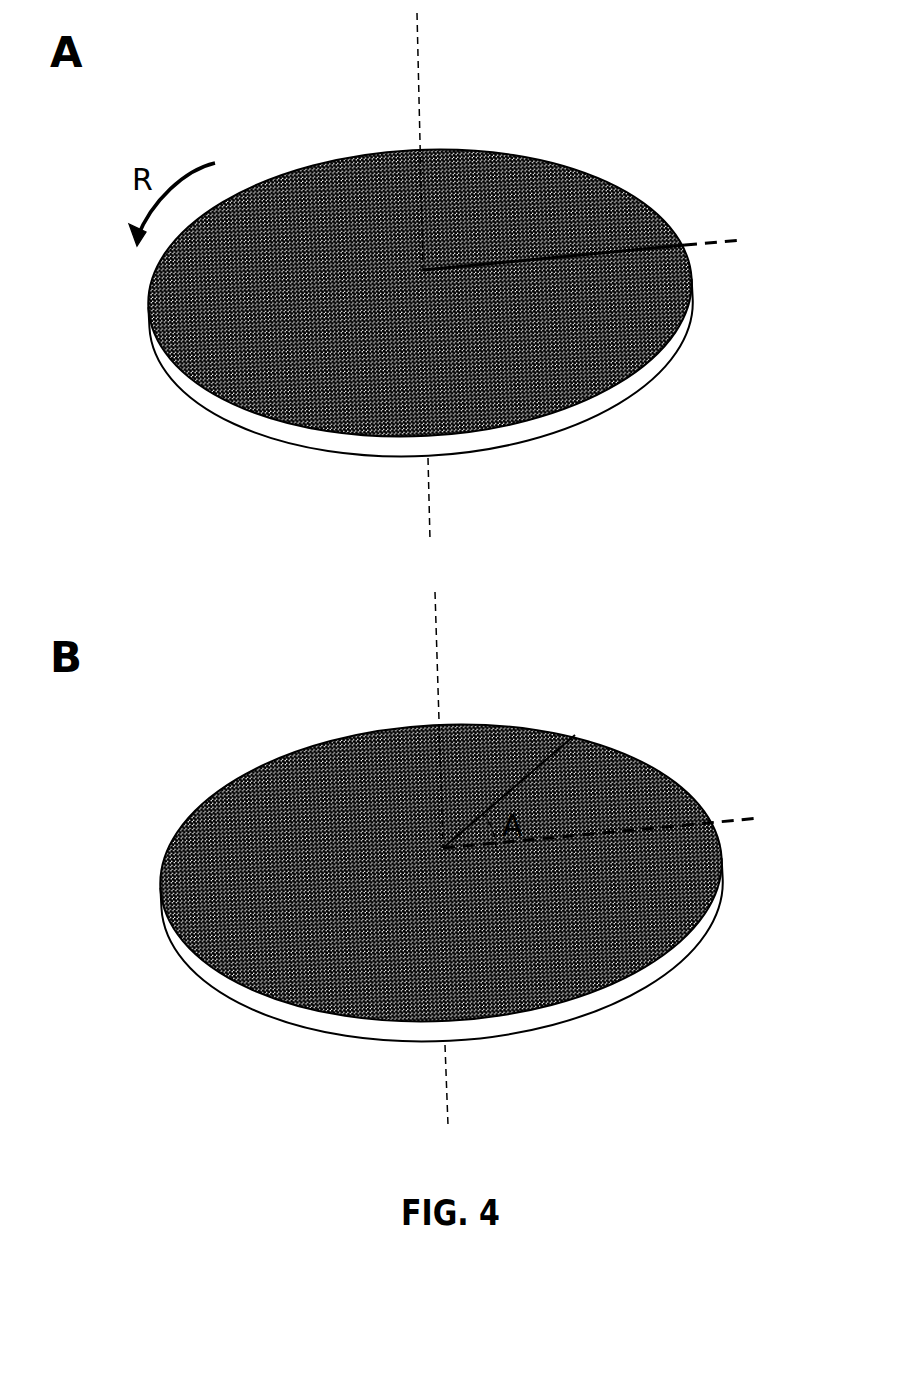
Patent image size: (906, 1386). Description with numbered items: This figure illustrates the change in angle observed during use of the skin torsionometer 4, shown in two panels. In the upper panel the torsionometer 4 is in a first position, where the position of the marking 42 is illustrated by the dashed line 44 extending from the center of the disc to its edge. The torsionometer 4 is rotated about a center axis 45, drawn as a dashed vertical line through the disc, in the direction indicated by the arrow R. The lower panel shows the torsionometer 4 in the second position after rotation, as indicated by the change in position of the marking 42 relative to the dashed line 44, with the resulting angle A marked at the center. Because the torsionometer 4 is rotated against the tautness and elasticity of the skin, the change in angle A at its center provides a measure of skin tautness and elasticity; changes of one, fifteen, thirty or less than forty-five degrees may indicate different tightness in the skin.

The torsionometer 4 is at (436, 132).
The marking 42 is at (552, 257).
The dashed line 44 is at (697, 240).
The center axis 45 is at (420, 180).